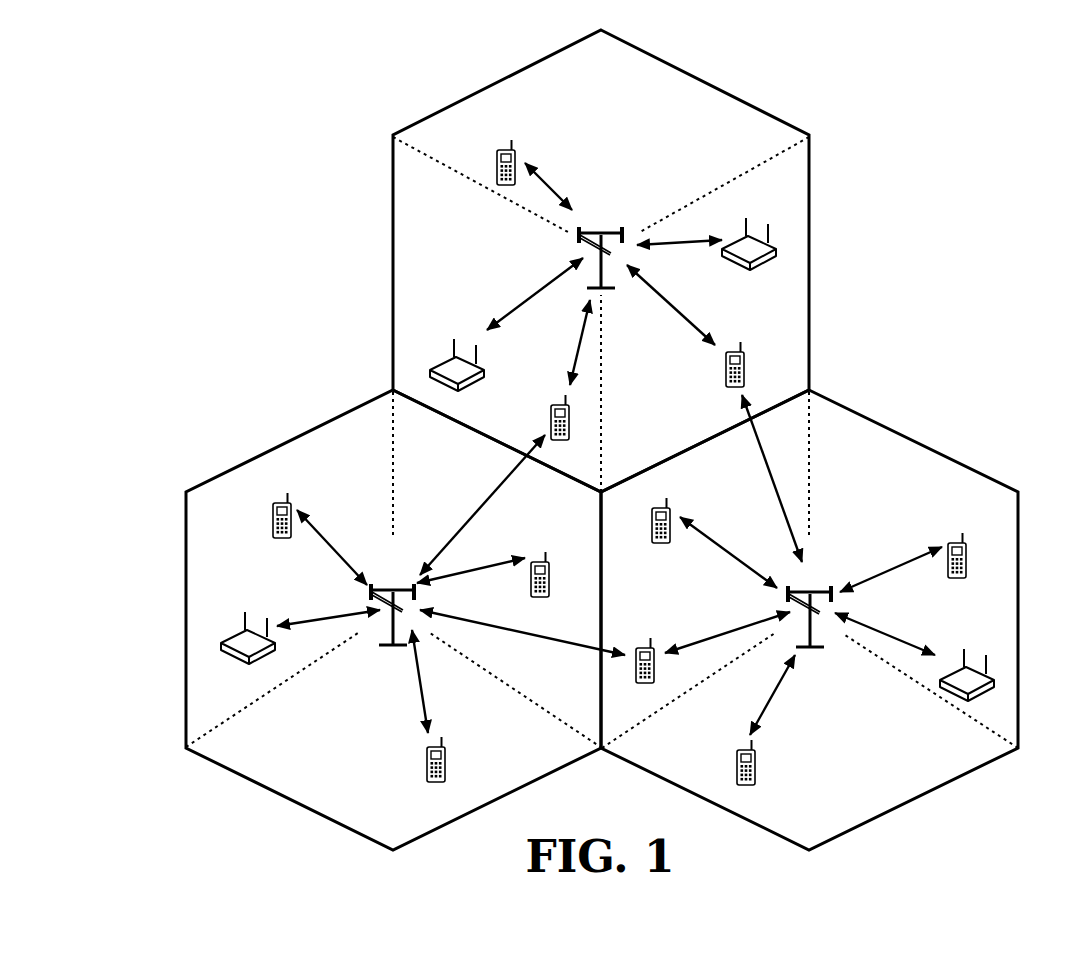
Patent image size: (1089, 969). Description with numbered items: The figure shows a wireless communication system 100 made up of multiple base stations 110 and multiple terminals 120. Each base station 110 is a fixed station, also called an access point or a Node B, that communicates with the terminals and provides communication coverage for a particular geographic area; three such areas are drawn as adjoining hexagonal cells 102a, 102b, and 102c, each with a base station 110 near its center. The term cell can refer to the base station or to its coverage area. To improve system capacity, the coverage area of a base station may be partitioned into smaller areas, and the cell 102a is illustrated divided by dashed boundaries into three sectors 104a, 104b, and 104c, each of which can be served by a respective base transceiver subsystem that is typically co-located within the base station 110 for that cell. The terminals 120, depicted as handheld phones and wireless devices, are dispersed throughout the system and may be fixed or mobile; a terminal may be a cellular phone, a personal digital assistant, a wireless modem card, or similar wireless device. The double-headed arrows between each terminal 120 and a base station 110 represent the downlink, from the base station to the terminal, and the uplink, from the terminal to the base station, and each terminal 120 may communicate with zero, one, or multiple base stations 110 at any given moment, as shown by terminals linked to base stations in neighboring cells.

The wireless communication system 100 is at (948, 98).
The cell 102a is at (708, 81).
The cell 102b is at (290, 437).
The cell 102c is at (912, 437).
The sector 104a is at (601, 149).
The sector 104b is at (394, 480).
The sector 104c is at (810, 570).
The base station 110 is at (600, 229).
The terminal 120 is at (498, 160).